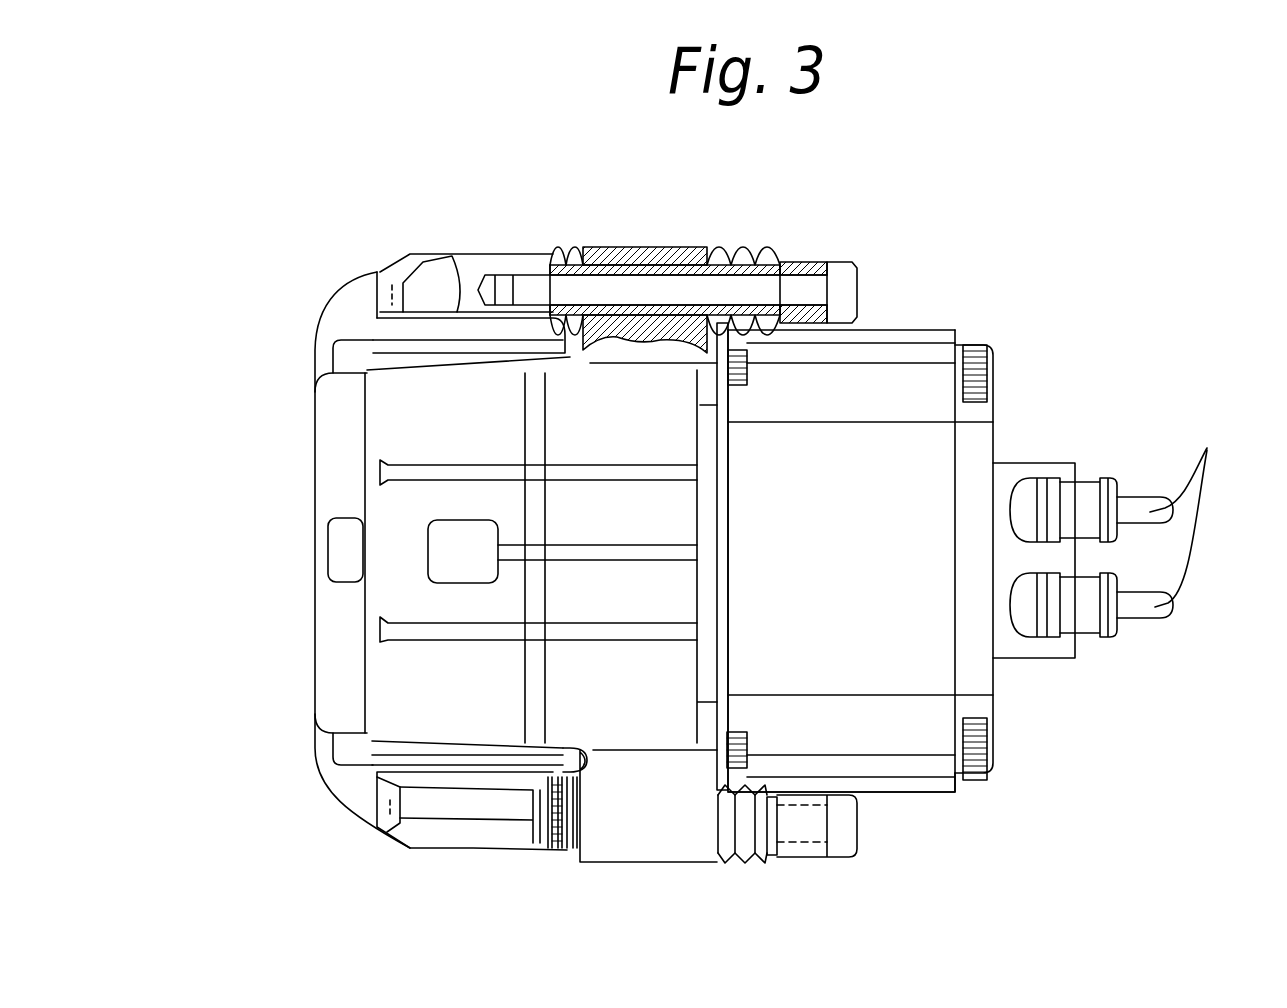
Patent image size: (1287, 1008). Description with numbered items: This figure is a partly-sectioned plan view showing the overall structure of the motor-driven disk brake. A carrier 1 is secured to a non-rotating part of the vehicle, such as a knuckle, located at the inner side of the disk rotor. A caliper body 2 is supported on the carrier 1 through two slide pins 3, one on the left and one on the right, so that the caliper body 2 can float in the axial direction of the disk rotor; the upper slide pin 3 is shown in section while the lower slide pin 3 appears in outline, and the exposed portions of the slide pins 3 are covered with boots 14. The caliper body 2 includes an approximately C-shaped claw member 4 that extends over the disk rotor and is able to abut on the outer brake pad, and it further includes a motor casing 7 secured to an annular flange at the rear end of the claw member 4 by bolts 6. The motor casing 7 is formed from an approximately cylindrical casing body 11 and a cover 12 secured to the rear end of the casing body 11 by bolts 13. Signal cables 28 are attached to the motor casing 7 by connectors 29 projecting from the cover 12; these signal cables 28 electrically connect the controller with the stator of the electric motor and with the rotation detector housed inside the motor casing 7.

The carrier 1 is at (312, 789).
The caliper body 2 is at (917, 318).
The slide pins 3 is at (658, 295).
The claw member 4 is at (347, 450).
The bolts 6 is at (747, 747).
The motor casing 7 is at (956, 808).
The casing body 11 is at (913, 470).
The cover 12 is at (970, 675).
The bolts 13 is at (973, 758).
The boots 14 is at (740, 262).
The signal cables 28 is at (1199, 518).
The connectors 29 is at (1037, 478).